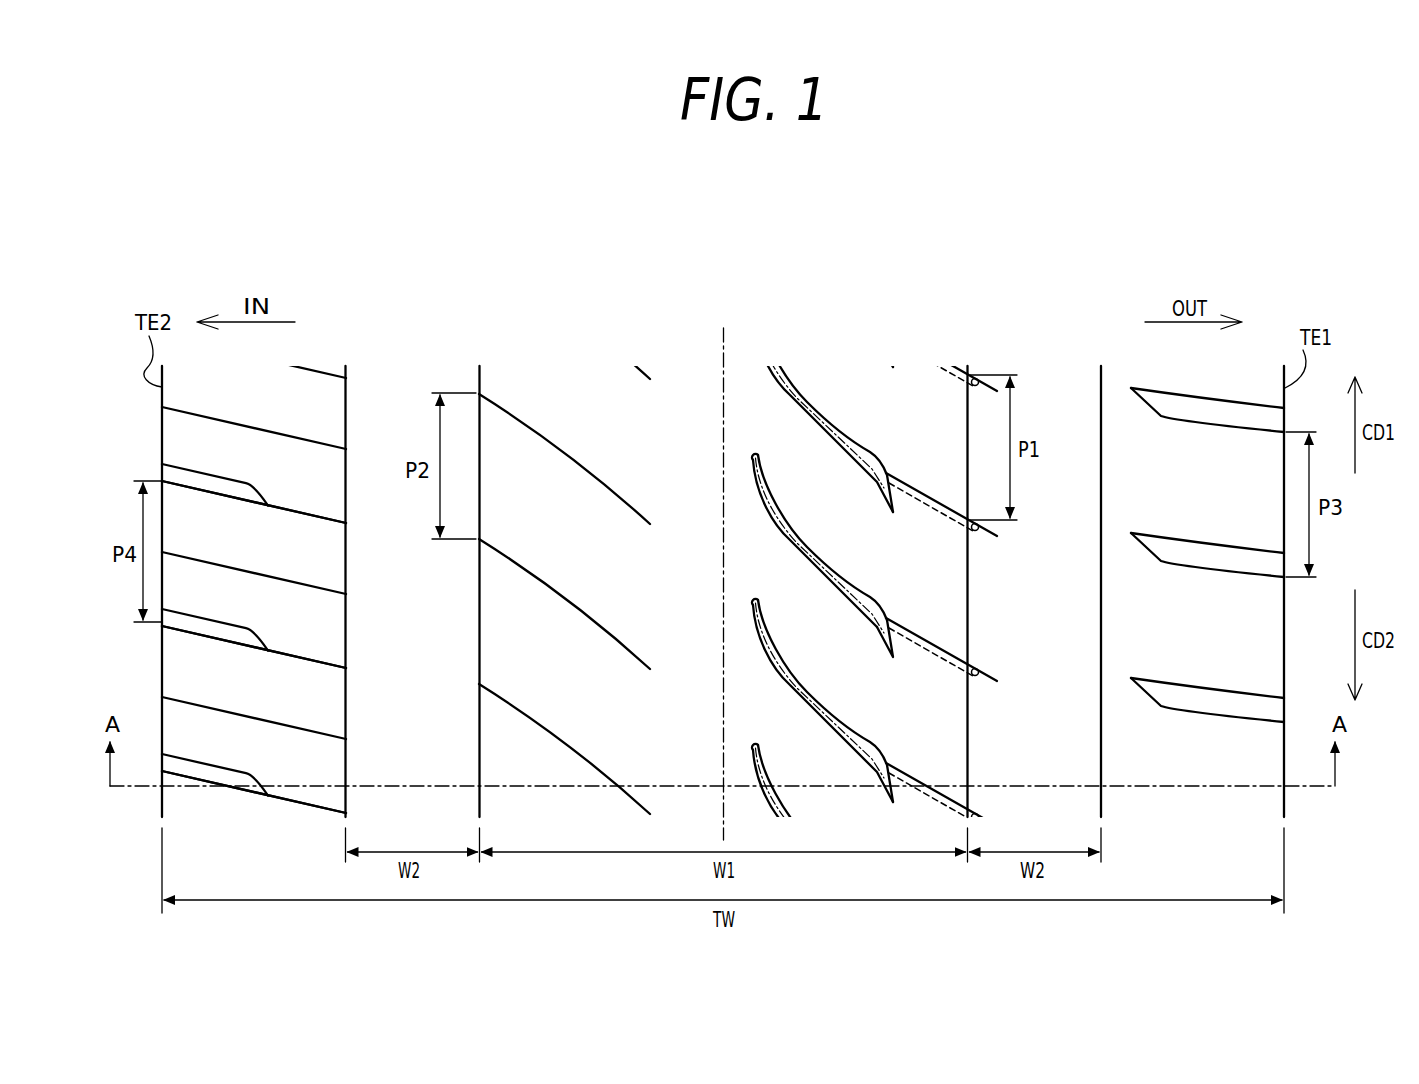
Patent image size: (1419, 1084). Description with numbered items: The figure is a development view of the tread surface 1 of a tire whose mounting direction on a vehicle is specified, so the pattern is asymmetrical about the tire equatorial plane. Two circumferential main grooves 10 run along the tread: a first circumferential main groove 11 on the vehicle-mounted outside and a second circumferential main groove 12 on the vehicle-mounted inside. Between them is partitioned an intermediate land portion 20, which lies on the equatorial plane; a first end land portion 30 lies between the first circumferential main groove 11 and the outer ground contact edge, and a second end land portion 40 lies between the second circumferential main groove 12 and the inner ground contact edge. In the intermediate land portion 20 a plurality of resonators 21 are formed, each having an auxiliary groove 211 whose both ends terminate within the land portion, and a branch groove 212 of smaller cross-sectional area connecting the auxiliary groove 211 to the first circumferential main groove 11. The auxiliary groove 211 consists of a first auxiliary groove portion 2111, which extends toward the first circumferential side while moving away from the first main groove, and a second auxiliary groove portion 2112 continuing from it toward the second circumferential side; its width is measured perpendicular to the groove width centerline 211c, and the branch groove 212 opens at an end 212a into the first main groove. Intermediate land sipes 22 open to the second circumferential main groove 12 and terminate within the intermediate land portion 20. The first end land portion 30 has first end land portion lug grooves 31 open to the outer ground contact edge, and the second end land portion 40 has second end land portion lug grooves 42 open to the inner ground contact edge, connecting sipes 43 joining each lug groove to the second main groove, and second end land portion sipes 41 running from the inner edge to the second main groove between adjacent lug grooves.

The tread surface 1 is at (548, 278).
The circumferential main grooves 10 is at (742, 547).
The first circumferential main groove 11 is at (1058, 393).
The second circumferential main groove 12 is at (404, 383).
The intermediate land portion 20 is at (692, 365).
The resonator 21 is at (884, 588).
The auxiliary groove 211 is at (815, 564).
The first auxiliary groove portion 2111 is at (818, 558).
The second auxiliary groove portion 2112 is at (880, 634).
The groove width centerline 211c is at (776, 512).
The branch groove 212 is at (935, 644).
The sipe end 212a is at (977, 670).
The intermediate land sipe 22 is at (588, 606).
The first end land portion 30 is at (1241, 362).
The first end land portion lug groove 31 is at (1208, 558).
The second end land portion 40 is at (281, 378).
The second end land portion sipe 41 is at (253, 574).
The second end land portion lug groove 42 is at (197, 476).
The connecting sipe 43 is at (310, 514).